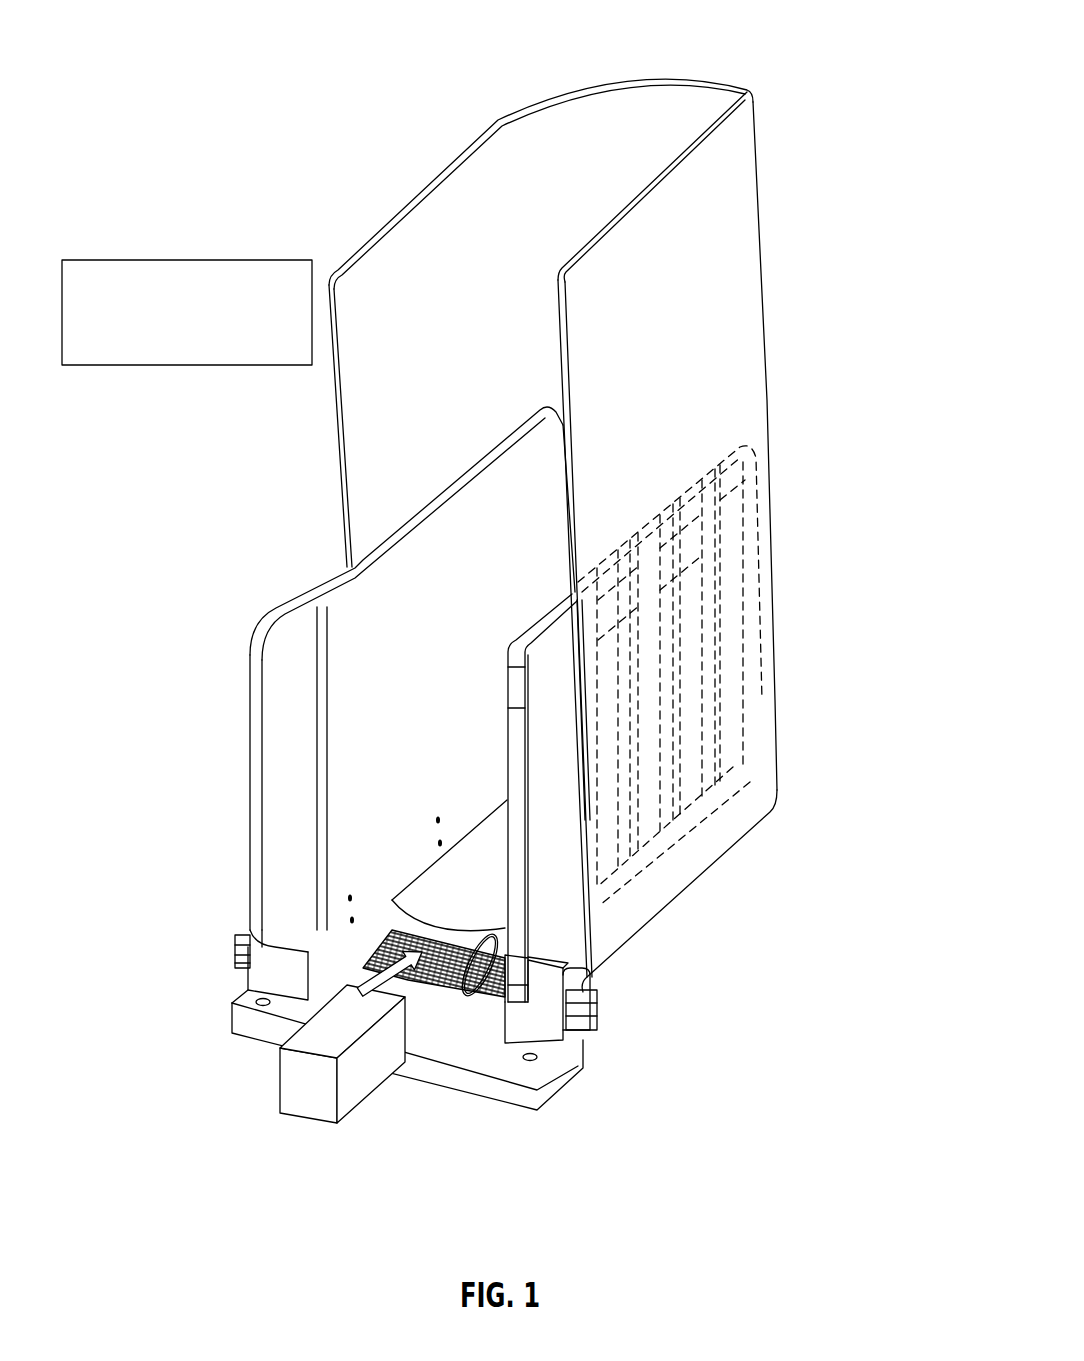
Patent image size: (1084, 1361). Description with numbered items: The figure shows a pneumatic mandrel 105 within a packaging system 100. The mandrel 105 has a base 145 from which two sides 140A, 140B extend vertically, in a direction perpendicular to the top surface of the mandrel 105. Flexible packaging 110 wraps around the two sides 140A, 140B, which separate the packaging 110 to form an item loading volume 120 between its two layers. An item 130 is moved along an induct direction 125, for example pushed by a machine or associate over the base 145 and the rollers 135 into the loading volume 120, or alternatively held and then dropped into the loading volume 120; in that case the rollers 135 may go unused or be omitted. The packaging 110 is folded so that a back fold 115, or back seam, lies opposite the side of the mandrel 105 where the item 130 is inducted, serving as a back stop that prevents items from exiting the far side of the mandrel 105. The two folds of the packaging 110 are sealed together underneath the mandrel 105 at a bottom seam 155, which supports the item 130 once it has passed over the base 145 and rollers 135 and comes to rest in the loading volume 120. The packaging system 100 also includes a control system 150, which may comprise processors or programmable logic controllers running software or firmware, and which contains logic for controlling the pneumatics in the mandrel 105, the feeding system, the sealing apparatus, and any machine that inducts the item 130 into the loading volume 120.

The packaging system 100 is at (360, 68).
The pneumatic mandrel 105 is at (306, 592).
The packaging 110 is at (500, 118).
The back fold 115 is at (762, 168).
The item loading volume 120 is at (492, 825).
The induct direction 125 is at (393, 985).
The item 130 is at (305, 1122).
The rollers 135 is at (460, 998).
The side 140A is at (252, 720).
The side 140B is at (517, 736).
The base 145 is at (537, 1108).
The control system 150 is at (206, 339).
The bottom seam 155 is at (678, 902).